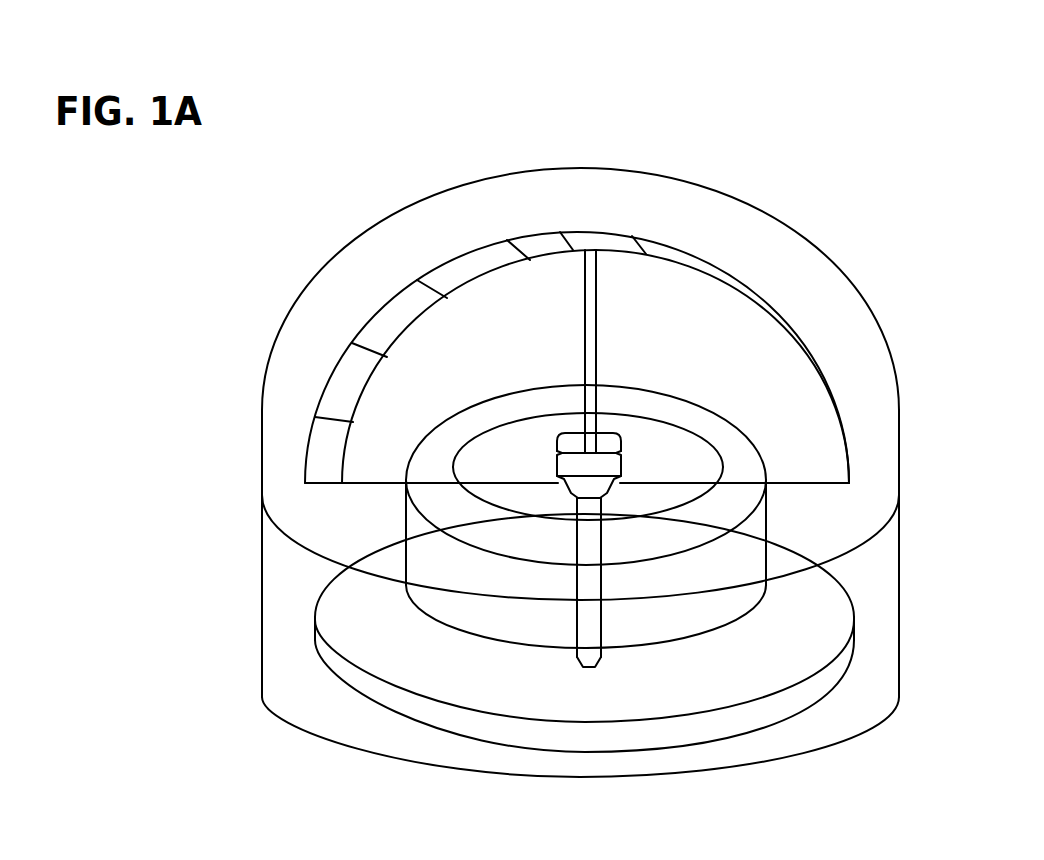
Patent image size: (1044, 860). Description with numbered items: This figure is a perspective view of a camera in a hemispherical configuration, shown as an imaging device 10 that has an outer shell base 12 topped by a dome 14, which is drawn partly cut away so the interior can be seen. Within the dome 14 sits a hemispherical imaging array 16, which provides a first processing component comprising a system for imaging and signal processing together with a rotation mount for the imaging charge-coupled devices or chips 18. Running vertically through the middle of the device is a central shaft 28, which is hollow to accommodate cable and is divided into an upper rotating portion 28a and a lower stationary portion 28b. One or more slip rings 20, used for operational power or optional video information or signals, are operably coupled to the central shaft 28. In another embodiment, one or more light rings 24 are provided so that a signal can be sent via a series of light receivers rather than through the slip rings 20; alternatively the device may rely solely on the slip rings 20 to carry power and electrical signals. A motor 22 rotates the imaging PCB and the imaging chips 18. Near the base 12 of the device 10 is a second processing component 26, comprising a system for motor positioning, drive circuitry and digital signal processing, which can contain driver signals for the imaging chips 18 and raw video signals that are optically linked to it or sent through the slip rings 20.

The imaging device 10 is at (852, 122).
The outer shell base 12 is at (899, 687).
The dome 14 is at (850, 282).
The hemispherical imaging array 16 is at (720, 263).
The imaging chips 18 is at (332, 397).
The slip rings 20 is at (608, 443).
The motor 22 is at (462, 393).
The light rings 24 is at (505, 462).
The second processing component 26 is at (750, 687).
The central shaft 28 is at (585, 389).
The upper rotating portion 28a is at (613, 322).
The lower stationary portion 28b is at (608, 550).